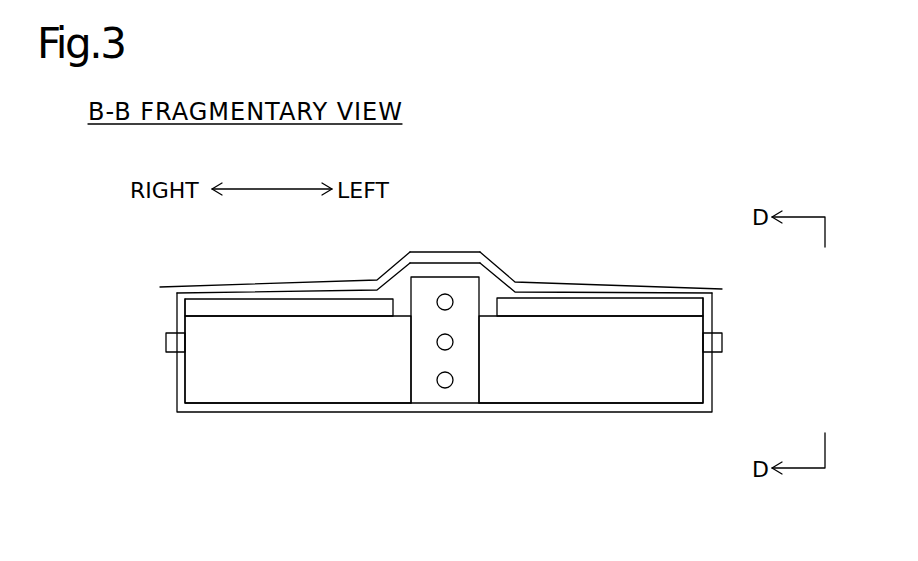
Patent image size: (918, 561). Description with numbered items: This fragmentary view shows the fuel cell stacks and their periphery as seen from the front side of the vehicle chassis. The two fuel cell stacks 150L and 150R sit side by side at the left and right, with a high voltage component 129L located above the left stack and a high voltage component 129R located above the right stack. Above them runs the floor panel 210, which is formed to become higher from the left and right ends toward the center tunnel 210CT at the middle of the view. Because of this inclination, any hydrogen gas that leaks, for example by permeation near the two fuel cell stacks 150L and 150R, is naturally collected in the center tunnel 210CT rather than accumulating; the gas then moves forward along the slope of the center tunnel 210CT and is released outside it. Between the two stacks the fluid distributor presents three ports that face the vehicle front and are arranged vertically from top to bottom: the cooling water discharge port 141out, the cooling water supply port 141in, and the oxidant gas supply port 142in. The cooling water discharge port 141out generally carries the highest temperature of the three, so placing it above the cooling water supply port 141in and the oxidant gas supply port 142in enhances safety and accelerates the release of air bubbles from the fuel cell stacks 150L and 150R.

The high voltage component 129R is at (233, 299).
The high voltage component 129L is at (653, 298).
The floor panel 210 is at (543, 282).
The center tunnel 210CT is at (447, 252).
The fuel cell stack 150R is at (313, 374).
The fuel cell stack 150L is at (620, 376).
The cooling water discharge port 141out is at (437, 302).
The cooling water supply port 141in is at (437, 343).
The oxidant gas supply port 142in is at (452, 384).